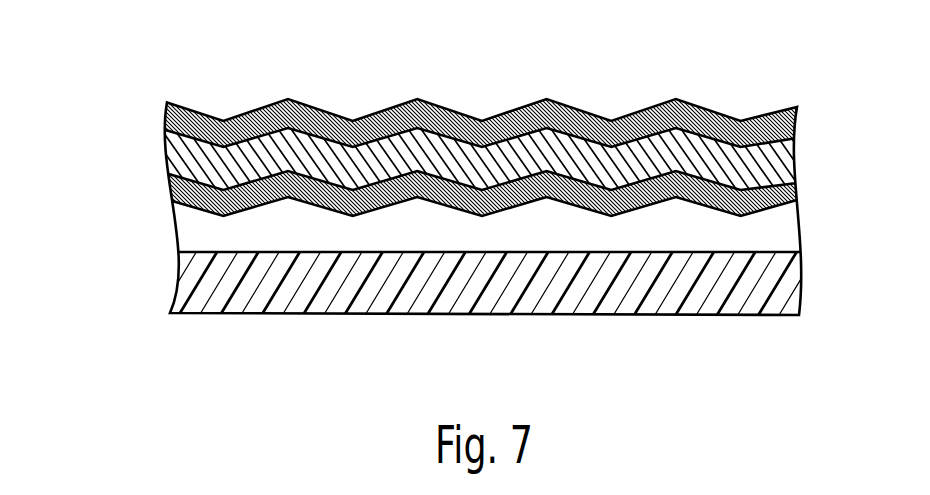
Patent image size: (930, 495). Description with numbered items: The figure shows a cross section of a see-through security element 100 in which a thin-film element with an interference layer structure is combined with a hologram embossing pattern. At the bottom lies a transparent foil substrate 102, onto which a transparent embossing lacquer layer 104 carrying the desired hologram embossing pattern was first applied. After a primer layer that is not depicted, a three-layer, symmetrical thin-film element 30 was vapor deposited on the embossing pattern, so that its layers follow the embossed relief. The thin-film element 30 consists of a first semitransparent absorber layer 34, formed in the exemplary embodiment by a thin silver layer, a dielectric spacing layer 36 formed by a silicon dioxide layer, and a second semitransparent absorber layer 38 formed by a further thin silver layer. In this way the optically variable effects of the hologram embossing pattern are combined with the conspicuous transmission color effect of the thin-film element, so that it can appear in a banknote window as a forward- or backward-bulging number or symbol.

The see-through security element 100 is at (116, 86).
The thin-film element 30 is at (470, 157).
The second semitransparent absorber layer 38 is at (790, 117).
The dielectric spacing layer 36 is at (773, 160).
The first semitransparent absorber layer 34 is at (857, 95).
The transparent embossing lacquer layer 104 is at (785, 233).
The transparent foil substrate 102 is at (790, 288).